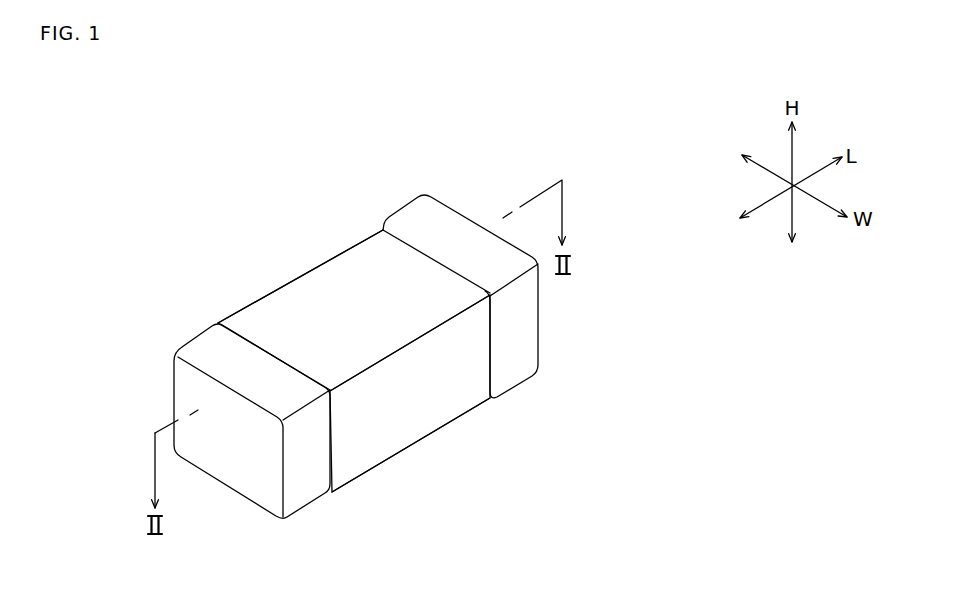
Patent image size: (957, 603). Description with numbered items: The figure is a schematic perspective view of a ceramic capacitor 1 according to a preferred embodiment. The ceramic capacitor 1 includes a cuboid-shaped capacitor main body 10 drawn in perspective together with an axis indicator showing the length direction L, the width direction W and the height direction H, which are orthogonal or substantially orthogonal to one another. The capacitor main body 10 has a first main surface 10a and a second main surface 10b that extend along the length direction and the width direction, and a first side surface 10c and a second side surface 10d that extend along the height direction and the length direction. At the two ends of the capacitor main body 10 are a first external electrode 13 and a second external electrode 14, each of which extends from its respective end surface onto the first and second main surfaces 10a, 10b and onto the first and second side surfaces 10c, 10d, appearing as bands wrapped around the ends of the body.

The ceramic capacitor 1 is at (475, 166).
The capacitor main body 10 is at (354, 357).
The first main surface 10a is at (337, 282).
The second main surface 10b is at (395, 455).
The first side surface 10c is at (368, 237).
The second side surface 10d is at (357, 462).
The first external electrode 13 is at (172, 400).
The second external electrode 14 is at (544, 323).